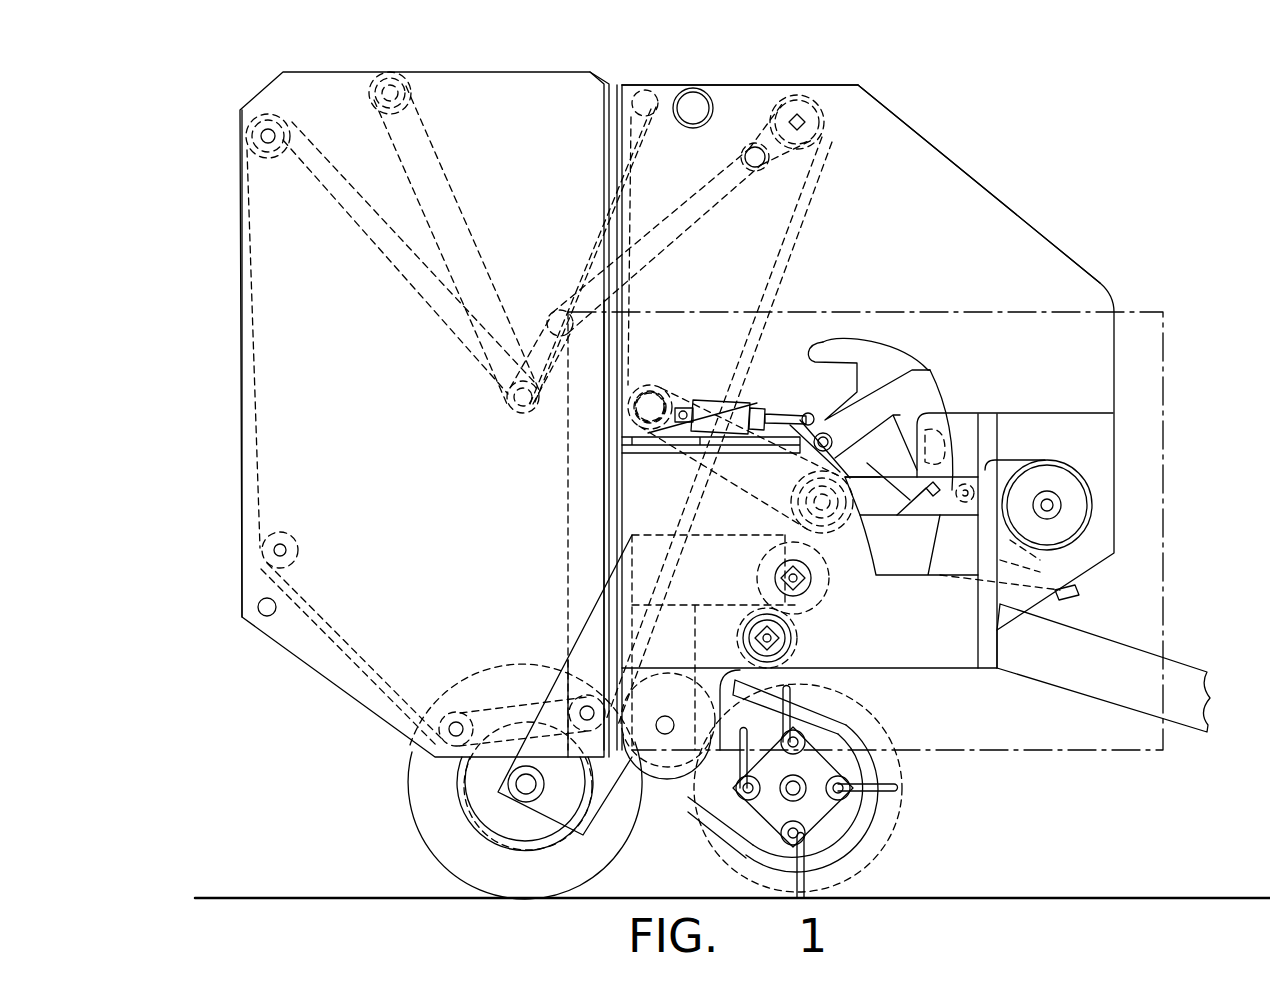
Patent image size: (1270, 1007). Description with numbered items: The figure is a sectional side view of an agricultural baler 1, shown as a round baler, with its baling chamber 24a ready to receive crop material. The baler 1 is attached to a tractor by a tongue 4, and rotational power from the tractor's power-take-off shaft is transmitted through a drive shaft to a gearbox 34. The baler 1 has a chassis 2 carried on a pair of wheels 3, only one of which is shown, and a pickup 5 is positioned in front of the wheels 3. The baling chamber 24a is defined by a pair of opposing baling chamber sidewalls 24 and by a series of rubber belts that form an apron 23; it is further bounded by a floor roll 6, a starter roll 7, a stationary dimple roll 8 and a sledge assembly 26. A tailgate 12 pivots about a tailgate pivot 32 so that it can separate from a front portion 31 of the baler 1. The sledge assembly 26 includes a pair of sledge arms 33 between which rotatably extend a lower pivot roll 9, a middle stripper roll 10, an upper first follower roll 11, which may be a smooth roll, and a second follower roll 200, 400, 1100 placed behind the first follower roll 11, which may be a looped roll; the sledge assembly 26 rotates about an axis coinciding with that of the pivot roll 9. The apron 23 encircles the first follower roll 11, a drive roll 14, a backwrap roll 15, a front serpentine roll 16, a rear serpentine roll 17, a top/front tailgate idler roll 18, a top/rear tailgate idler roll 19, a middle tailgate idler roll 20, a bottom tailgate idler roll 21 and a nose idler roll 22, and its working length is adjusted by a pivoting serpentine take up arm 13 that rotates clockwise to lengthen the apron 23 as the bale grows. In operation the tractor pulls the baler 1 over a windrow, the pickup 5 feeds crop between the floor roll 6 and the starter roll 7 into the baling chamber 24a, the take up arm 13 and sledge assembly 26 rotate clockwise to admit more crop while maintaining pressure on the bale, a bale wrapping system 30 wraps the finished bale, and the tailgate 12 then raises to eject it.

The agricultural baler 1 is at (1124, 114).
The chassis 2 is at (1078, 262).
The wheels 3 is at (1175, 310).
The tongue 4 is at (1185, 668).
The pickup 5 is at (932, 806).
The floor roll 6 is at (668, 780).
The starter roll 7 is at (795, 638).
The stationary dimple roll 8 is at (832, 598).
The pivot roll 9 is at (785, 493).
The stripper roll 10 is at (726, 470).
The first follower roll 11 is at (652, 398).
The tailgate 12 is at (242, 356).
The serpentine take up arm 13 is at (597, 235).
The drive roll 14 is at (799, 114).
The backwrap roll 15 is at (750, 147).
The front serpentine roll 16 is at (558, 310).
The rear serpentine roll 17 is at (518, 408).
The top/front tailgate idler roll 18 is at (395, 92).
The top/rear tailgate idler roll 19 is at (262, 134).
The middle tailgate idler roll 20 is at (286, 550).
The bottom tailgate idler roll 21 is at (455, 722).
The nose idler roll 22 is at (583, 708).
The apron 23 is at (252, 440).
The baling chamber sidewalls 24 is at (393, 466).
The baling chamber 24a is at (712, 513).
The sledge assembly 26 is at (775, 393).
The bale wrapping system 30 is at (1085, 460).
The front portion 31 is at (1012, 212).
The tailgate pivot 32 is at (636, 106).
The sledge arms 33 is at (690, 392).
The gearbox 34 is at (945, 555).
The second follower roll 200 is at (650, 400).
The second follower roll 400 is at (786, 315).
The second follower roll 1100 is at (817, 315).